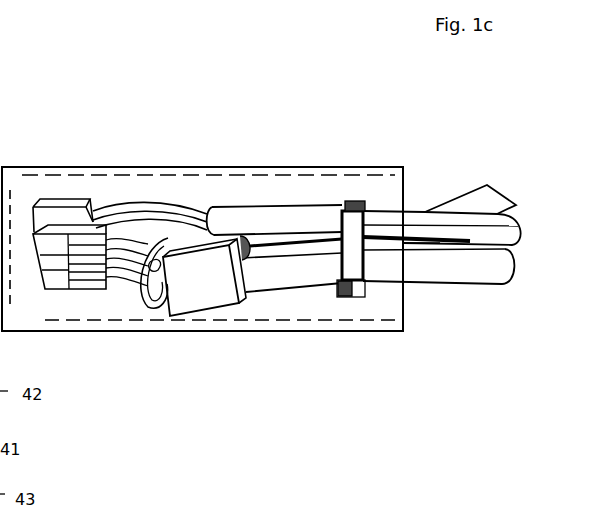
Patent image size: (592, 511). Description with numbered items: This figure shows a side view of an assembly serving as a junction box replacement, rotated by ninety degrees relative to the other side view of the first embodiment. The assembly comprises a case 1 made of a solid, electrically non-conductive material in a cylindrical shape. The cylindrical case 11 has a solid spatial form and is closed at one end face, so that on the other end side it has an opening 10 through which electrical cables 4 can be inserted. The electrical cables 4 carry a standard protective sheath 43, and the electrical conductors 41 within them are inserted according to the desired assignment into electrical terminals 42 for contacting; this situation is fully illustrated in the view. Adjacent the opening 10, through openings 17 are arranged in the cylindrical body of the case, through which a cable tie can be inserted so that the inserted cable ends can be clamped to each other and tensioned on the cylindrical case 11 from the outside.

The case 1 is at (68, 161).
The cylindrical case 11 is at (224, 162).
The opening 10 is at (419, 186).
The through openings 17 is at (352, 200).
The electrical cables 4 is at (469, 302).
The electrical conductors 41 is at (156, 305).
The electrical terminals 42 is at (60, 281).
The protective sheath 43 is at (415, 283).